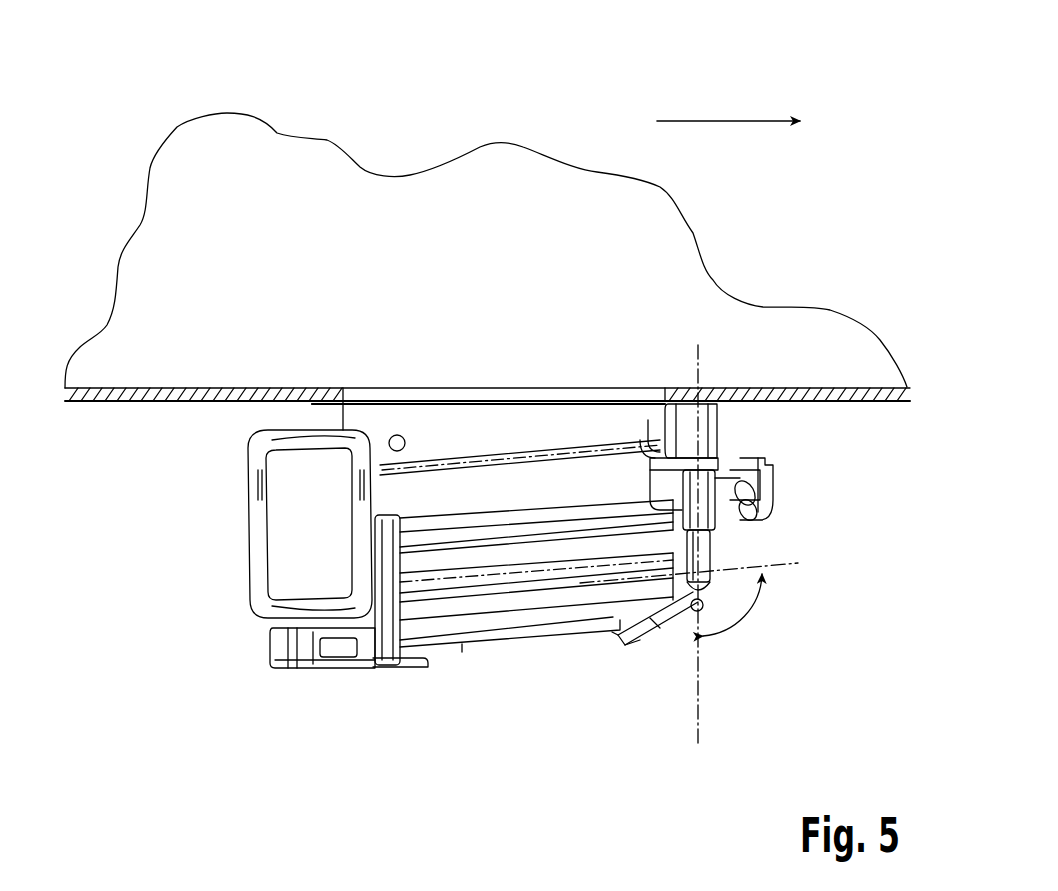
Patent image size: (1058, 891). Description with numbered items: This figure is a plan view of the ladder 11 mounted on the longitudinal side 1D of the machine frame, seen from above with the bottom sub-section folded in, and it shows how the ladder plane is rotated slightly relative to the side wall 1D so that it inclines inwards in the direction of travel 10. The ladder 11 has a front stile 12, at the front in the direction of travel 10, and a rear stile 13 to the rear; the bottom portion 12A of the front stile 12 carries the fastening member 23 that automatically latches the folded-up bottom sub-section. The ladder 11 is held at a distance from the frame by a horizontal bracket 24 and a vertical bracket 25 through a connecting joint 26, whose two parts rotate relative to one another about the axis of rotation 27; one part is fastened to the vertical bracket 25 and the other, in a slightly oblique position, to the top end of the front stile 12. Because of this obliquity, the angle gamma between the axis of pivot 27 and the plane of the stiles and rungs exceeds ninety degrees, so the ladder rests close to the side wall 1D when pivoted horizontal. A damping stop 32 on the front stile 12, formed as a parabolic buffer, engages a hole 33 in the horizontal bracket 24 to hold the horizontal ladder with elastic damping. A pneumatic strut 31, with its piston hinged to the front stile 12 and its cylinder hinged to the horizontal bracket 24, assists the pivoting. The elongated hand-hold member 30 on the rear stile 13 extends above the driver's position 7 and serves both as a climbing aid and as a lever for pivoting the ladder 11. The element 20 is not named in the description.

The driver's position 7 is at (447, 193).
The longitudinal side of the frame 1D is at (877, 406).
The direction of travel 10 is at (718, 120).
The ladder 11 is at (508, 688).
The front stile 12 is at (702, 562).
The bottom portion of the front stile 12A is at (641, 630).
The rear stile 13 is at (390, 660).
The lower bracket 20 is at (343, 688).
The fastening member 23 is at (685, 616).
The horizontal bracket 24 is at (512, 417).
The vertical bracket 25 is at (655, 446).
The connecting joint 26 is at (688, 445).
The axis of rotation 27 is at (700, 708).
The hand-hold member 30 is at (257, 480).
The pneumatic strut 31 is at (755, 497).
The damping stop 32 is at (745, 470).
The hole 33 is at (398, 434).